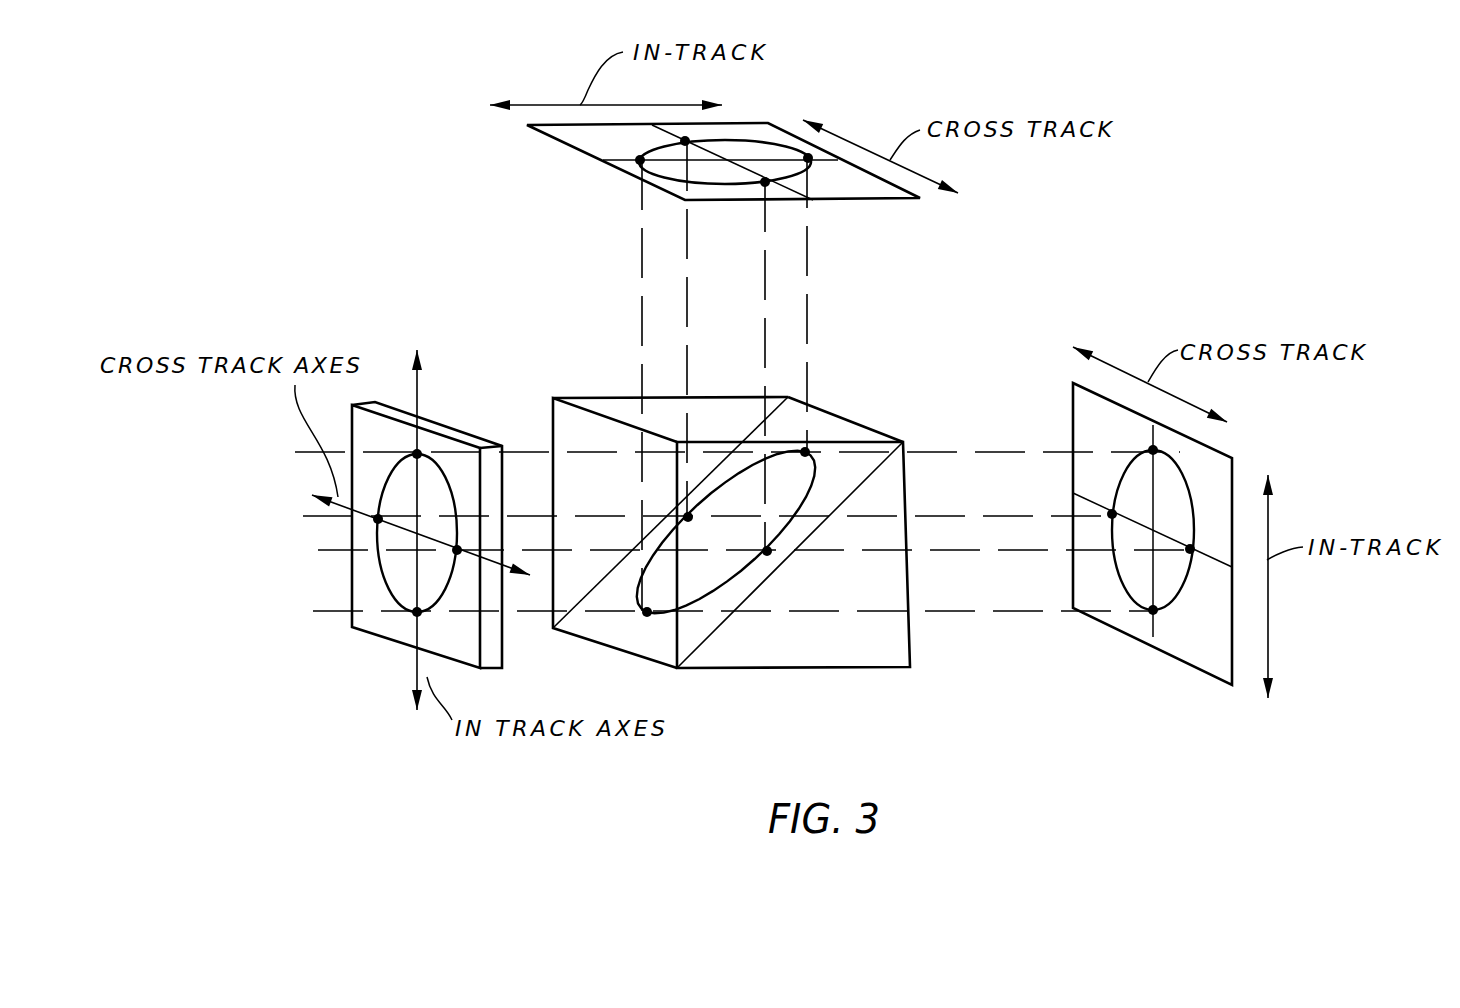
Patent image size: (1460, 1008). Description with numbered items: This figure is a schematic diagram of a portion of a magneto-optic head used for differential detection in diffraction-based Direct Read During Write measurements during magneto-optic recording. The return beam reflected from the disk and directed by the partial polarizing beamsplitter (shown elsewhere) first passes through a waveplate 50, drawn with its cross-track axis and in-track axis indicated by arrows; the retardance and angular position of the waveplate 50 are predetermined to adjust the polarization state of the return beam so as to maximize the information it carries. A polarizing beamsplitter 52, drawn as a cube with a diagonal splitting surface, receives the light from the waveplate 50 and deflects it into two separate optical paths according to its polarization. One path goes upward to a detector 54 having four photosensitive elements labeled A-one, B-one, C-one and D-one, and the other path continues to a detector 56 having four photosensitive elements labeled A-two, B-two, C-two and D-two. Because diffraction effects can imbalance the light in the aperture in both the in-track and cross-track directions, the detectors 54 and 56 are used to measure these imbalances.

The waveplate 50 is at (458, 427).
The polarizing beamsplitter 52 is at (838, 670).
The detector 54 is at (587, 153).
The detector 56 is at (1207, 672).